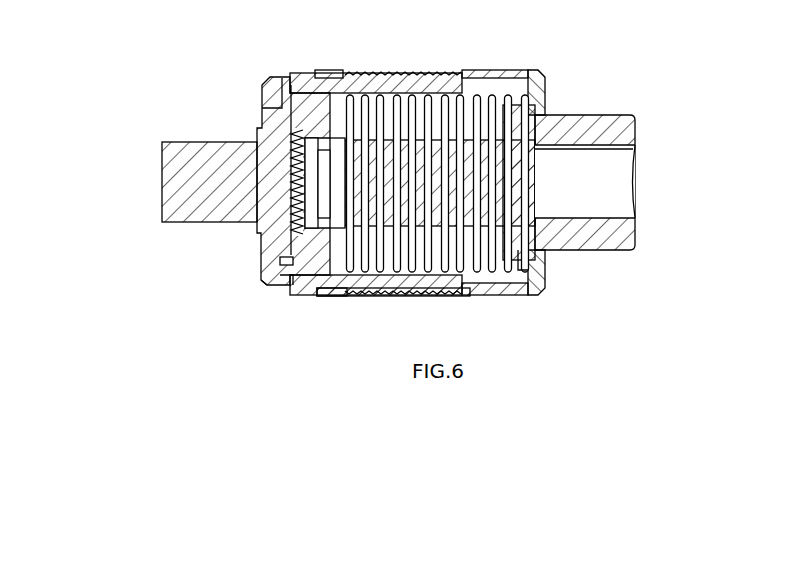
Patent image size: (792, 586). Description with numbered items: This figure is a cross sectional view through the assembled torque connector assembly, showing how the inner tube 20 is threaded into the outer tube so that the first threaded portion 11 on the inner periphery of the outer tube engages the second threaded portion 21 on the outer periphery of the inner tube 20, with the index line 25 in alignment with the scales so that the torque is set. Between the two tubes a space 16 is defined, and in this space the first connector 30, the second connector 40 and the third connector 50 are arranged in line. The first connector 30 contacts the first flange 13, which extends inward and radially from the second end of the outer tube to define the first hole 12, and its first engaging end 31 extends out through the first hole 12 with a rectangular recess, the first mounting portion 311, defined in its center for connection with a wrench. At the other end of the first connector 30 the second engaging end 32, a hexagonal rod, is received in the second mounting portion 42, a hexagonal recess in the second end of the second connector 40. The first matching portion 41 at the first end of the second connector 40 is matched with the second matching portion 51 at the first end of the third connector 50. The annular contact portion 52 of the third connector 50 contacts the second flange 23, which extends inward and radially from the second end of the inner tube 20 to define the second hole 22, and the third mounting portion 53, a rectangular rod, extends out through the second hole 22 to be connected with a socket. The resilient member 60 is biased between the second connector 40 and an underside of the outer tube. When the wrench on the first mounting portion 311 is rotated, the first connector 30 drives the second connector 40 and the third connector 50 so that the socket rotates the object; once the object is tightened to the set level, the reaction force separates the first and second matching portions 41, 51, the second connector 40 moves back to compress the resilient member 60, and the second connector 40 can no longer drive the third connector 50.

The third mounting portion 53 is at (207, 152).
The third connector 50 is at (272, 135).
The annular contact portion 52 is at (283, 96).
The second matching portion 51 is at (293, 110).
The first matching portion 41 is at (298, 104).
The second mounting portion 42 is at (338, 142).
The second connector 40 is at (385, 98).
The space 16 is at (420, 98).
The second engaging end 32 is at (495, 53).
The first flange 13 is at (535, 102).
The first hole 12 is at (543, 117).
The first mounting portion 311 is at (615, 186).
The first engaging end 31 is at (607, 245).
The first connector 30 is at (528, 256).
The resilient member 60 is at (527, 292).
The first threaded portion 11 is at (407, 290).
The second threaded portion 21 is at (372, 292).
The index line 25 is at (363, 290).
The inner tube 20 is at (292, 278).
The second flange 23 is at (277, 263).
The second hole 22 is at (273, 261).